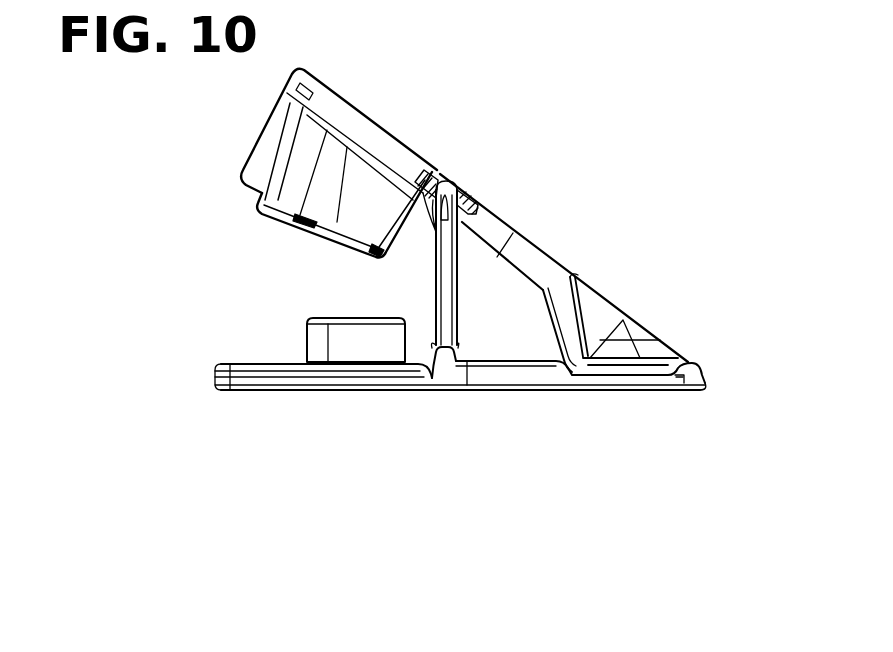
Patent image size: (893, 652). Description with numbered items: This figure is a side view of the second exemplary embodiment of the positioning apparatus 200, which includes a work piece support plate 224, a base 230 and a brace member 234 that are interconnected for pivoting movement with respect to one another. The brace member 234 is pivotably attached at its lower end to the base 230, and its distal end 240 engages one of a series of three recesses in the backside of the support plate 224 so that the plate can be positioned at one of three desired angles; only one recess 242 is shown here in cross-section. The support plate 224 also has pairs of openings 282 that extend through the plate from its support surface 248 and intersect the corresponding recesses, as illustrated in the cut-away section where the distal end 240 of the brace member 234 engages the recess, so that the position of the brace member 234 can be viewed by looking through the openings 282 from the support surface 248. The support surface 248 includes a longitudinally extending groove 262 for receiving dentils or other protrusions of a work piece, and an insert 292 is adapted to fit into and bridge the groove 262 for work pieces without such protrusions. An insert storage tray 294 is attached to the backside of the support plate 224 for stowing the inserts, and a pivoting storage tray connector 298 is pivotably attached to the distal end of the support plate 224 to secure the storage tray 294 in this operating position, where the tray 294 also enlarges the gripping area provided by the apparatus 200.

The positioning apparatus 200 is at (613, 182).
The pivoting storage tray connector 298 is at (257, 143).
The insert storage tray 294 is at (313, 228).
The recess 242 is at (432, 232).
The brace member 234 is at (437, 287).
The base 230 is at (287, 380).
The openings 282 is at (458, 180).
The distal end of brace member 240 is at (482, 203).
The support surface 248 is at (532, 240).
The work piece support plate 224 is at (540, 276).
The insert 292 is at (598, 308).
The longitudinally extending groove 262 is at (622, 335).